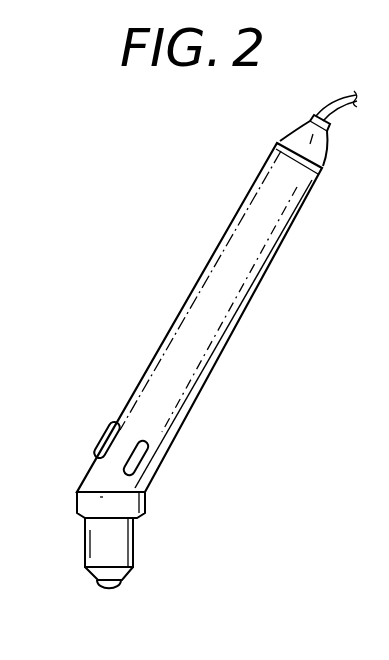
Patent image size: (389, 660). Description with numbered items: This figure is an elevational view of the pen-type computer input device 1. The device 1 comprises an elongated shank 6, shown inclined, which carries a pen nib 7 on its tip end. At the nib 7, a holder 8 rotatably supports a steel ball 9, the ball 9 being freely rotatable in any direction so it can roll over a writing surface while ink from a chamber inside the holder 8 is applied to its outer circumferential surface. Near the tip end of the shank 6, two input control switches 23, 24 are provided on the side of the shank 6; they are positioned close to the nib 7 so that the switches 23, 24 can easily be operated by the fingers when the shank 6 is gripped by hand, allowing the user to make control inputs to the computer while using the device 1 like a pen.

The pen-type computer input device 1 is at (164, 223).
The shank 6 is at (223, 334).
The pen nib 7 is at (60, 616).
The holder 8 is at (83, 542).
The steel ball 9 is at (135, 599).
The input control switch 23 is at (82, 427).
The input control switch 24 is at (174, 453).